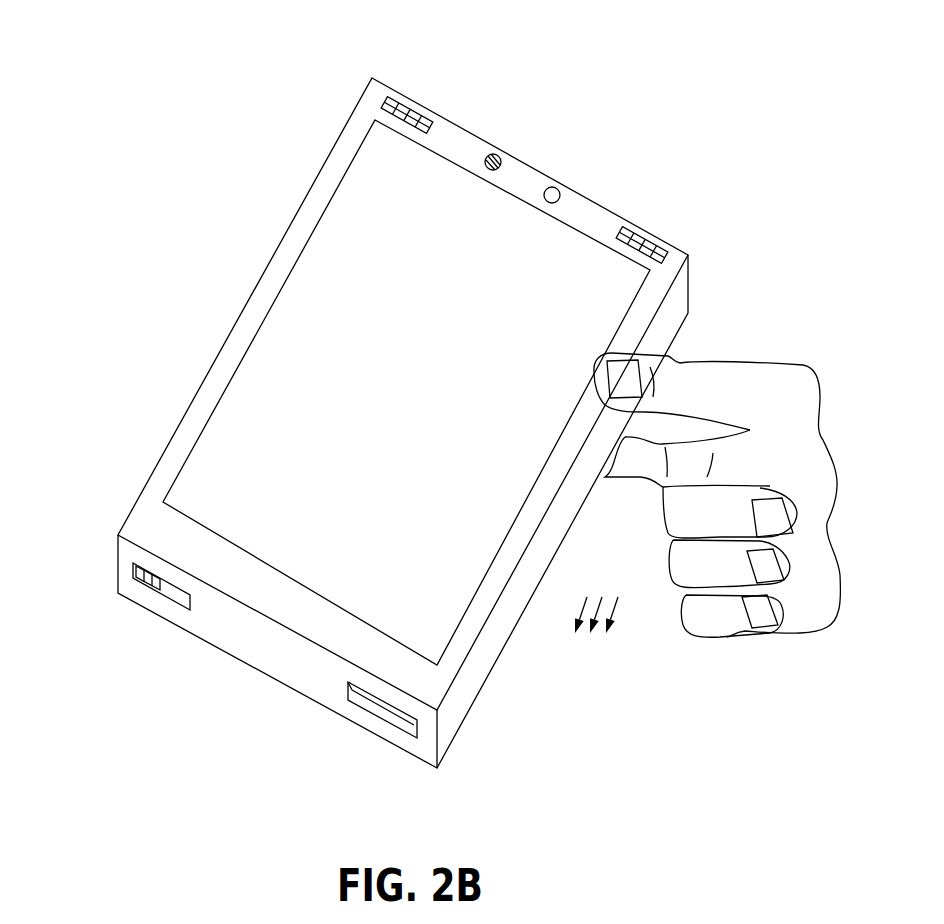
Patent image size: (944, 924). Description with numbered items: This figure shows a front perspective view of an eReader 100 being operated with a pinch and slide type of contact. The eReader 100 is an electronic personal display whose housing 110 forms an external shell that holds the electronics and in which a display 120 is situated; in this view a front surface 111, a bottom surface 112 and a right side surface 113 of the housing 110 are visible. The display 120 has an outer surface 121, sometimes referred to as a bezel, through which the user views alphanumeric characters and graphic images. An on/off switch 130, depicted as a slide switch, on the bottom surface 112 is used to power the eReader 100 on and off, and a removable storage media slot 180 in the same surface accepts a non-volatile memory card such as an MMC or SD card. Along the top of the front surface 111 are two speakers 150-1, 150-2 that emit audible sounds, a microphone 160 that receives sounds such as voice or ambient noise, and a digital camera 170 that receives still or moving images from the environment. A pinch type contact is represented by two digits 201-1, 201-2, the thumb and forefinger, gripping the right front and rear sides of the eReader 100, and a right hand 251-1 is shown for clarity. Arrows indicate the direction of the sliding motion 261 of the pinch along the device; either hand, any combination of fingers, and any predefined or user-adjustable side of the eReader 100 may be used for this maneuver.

The eReader 100 is at (158, 207).
The housing 110 is at (693, 290).
The front surface 111 is at (597, 223).
The bottom surface 112 is at (230, 628).
The right side surface 113 is at (475, 675).
The display 120 is at (373, 113).
The outer surface 121 is at (360, 197).
The on/off switch 130 is at (143, 590).
The speaker 150-1 is at (400, 102).
The speaker 150-2 is at (640, 233).
The microphone 160 is at (497, 153).
The digital camera 170 is at (553, 185).
The removable storage media slot 180 is at (367, 702).
The digit 201-1 is at (677, 355).
The digit 201-2 is at (624, 478).
The hand 251-1 is at (770, 637).
The direction of the sliding motion 261 is at (596, 601).